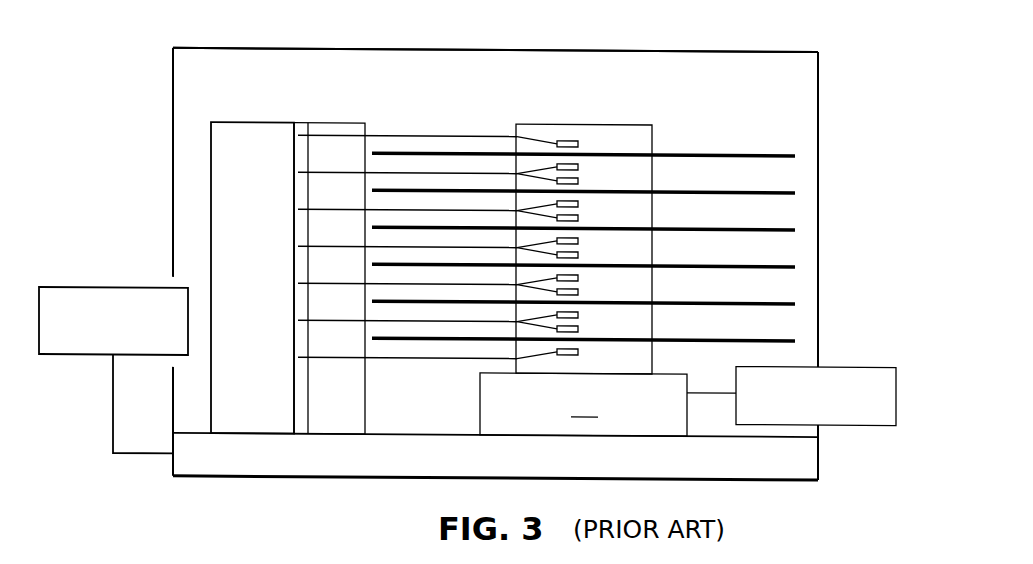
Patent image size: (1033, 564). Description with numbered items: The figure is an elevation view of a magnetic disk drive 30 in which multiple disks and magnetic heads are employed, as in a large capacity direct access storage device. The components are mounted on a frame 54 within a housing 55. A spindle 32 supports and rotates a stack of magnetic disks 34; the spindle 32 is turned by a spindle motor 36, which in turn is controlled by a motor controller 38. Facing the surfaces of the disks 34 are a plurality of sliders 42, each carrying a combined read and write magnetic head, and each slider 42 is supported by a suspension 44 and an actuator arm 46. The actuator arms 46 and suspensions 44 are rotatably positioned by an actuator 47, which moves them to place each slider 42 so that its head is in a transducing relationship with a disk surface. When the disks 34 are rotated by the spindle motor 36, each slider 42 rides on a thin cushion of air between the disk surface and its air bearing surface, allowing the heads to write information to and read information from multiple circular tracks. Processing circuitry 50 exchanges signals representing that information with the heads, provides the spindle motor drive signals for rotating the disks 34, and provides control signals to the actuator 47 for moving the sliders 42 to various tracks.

The magnetic disk drive 30 is at (707, 126).
The housing 55 is at (492, 50).
The frame 54 is at (227, 478).
The actuator 47 is at (242, 124).
The spindle 32 is at (640, 123).
The spindle motor 36 is at (583, 404).
The motor controller 38 is at (856, 423).
The processing circuitry 50 is at (81, 290).
The actuator arm 46 is at (483, 173).
The suspension 44 is at (547, 177).
The slider 42 is at (580, 166).
The magnetic disk 34 is at (795, 154).